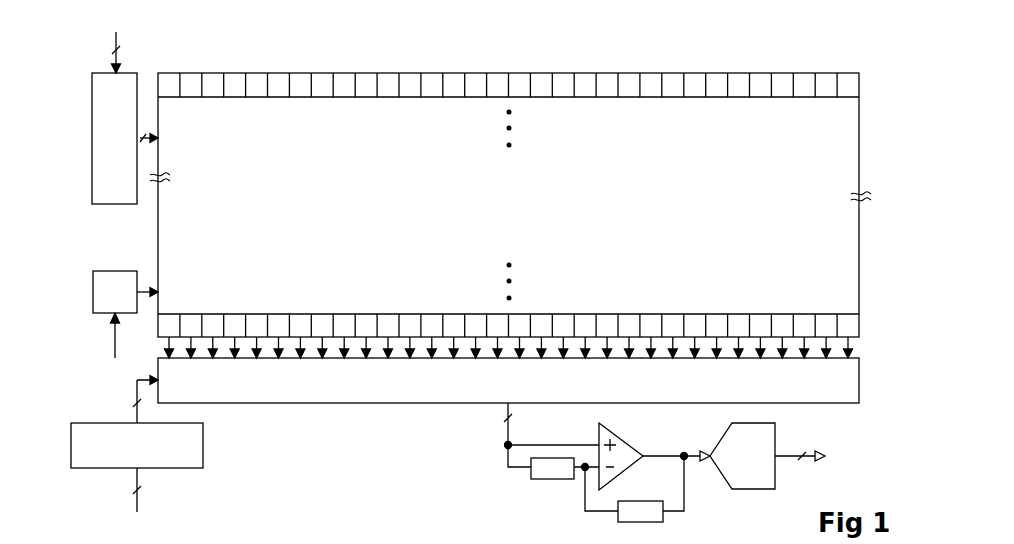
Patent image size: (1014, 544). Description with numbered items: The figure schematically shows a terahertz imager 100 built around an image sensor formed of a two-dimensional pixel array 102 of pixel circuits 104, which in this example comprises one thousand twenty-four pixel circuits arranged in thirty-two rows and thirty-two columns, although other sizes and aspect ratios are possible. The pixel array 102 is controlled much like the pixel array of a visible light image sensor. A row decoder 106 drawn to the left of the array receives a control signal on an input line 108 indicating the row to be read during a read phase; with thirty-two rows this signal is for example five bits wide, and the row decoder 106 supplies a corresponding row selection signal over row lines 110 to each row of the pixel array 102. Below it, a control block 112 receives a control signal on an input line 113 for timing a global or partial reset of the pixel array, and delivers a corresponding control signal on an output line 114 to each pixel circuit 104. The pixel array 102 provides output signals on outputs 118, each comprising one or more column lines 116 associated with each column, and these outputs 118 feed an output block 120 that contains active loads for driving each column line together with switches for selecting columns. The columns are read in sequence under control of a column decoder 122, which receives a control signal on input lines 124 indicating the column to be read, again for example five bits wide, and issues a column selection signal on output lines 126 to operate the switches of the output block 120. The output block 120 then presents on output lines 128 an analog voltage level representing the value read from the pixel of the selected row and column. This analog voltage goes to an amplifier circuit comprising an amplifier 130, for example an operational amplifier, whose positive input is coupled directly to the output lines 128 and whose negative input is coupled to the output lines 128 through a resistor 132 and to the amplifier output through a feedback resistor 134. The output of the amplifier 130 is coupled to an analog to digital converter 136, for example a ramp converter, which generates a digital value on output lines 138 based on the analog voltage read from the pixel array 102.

The terahertz imager 100 is at (772, 40).
The pixel array 102 is at (866, 102).
The pixel circuits 104 is at (168, 82).
The row decoder 106 is at (106, 143).
The input line 108 is at (115, 40).
The row control lines 110 is at (141, 136).
The control block 112 is at (97, 301).
The input line 113 is at (112, 345).
The output line 114 is at (147, 296).
The column output lines 116 is at (509, 347).
The outputs 118 is at (164, 346).
The output block 120 is at (358, 380).
The column decoder 122 is at (193, 449).
The input lines 124 is at (141, 503).
The output lines 126 is at (134, 414).
The output lines 128 is at (506, 433).
The amplifier 130 is at (630, 450).
The resistor 132 is at (552, 469).
The resistor 134 is at (633, 505).
The analog to digital converter 136 is at (760, 433).
The output lines 138 is at (805, 462).